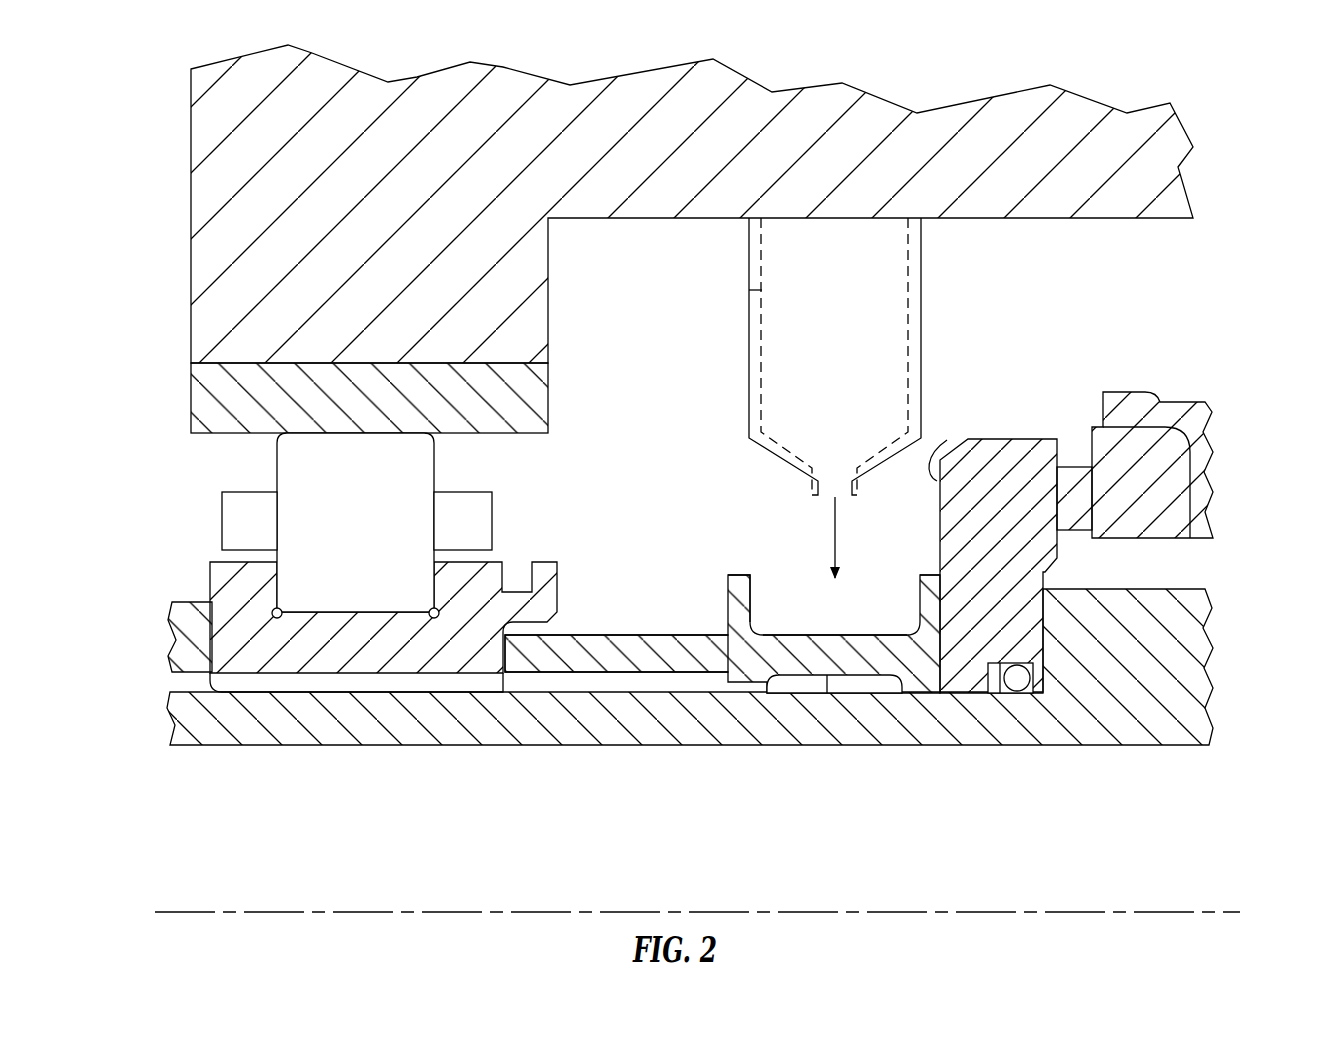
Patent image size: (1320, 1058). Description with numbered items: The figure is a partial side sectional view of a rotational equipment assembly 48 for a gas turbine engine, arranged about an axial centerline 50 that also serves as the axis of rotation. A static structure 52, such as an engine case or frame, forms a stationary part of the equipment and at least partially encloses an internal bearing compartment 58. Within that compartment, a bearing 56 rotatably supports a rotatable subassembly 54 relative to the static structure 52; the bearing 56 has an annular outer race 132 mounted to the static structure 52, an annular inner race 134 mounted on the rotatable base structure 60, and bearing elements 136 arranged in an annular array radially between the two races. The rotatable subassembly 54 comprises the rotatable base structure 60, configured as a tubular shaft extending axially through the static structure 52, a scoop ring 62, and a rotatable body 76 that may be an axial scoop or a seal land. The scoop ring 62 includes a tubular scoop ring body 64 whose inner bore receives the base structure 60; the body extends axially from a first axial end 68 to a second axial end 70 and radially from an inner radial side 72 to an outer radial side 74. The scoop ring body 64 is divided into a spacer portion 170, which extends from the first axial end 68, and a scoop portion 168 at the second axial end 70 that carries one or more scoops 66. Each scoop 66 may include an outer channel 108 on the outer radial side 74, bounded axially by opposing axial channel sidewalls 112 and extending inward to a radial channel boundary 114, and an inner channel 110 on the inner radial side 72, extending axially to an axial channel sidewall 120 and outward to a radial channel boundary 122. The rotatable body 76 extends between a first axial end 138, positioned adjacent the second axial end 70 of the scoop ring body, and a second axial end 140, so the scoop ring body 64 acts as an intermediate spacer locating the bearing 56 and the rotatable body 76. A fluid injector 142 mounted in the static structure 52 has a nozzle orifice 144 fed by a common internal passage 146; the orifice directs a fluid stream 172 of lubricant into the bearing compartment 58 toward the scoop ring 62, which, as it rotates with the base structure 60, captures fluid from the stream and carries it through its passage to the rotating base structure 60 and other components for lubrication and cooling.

The rotational equipment assembly 48 is at (1225, 86).
The axial centerline 50 is at (1228, 910).
The static structure 52 is at (797, 187).
The rotatable subassembly 54 is at (935, 430).
The bearing 56 is at (200, 517).
The bearing compartment 58 is at (668, 445).
The rotatable base structure 60 is at (592, 747).
The scoop ring 62 is at (668, 608).
The scoop ring body 64 is at (718, 640).
The scoop 66 is at (868, 622).
The first axial end 68 is at (505, 652).
The second axial end 70 is at (950, 678).
The inner radial side 72 is at (785, 700).
The outer radial side 74 is at (780, 555).
The rotatable body 76 is at (1045, 437).
The outer channel 108 is at (763, 580).
The inner channel 110 is at (860, 700).
The axial channel sidewall 112 is at (738, 575).
The radial channel boundary 114 is at (812, 635).
The axial channel sidewall 120 is at (918, 692).
The radial channel boundary 122 is at (825, 693).
The outer race 132 is at (198, 398).
The inner race 134 is at (218, 583).
The bearing elements 136 is at (428, 455).
The first axial end 138 is at (947, 440).
The second axial end 140 is at (1057, 547).
The fluid injector 142 is at (935, 265).
The nozzle orifice 144 is at (836, 470).
The internal passage 146 is at (750, 289).
The scoop portion 168 is at (852, 597).
The spacer portion 170 is at (623, 612).
The fluid stream 172 is at (832, 517).